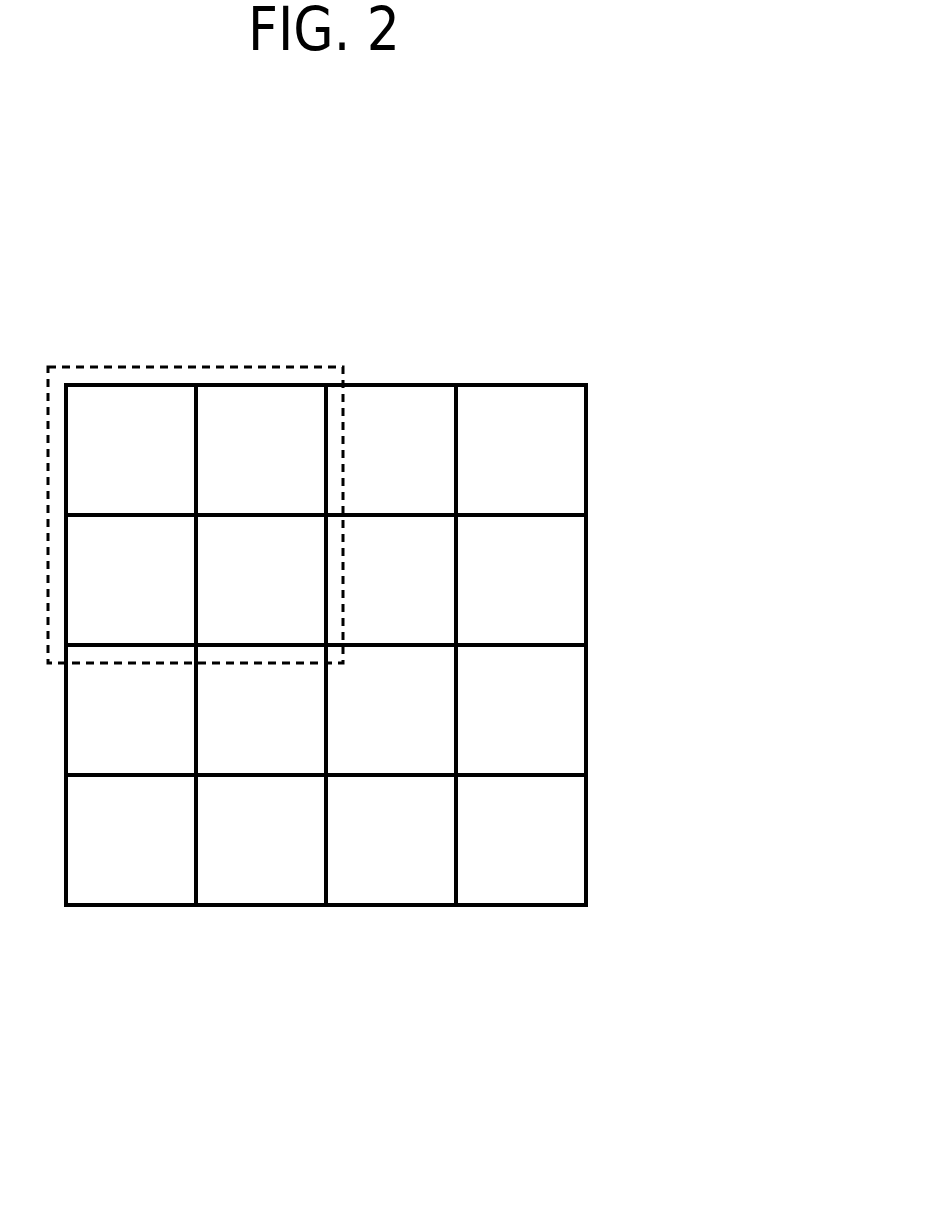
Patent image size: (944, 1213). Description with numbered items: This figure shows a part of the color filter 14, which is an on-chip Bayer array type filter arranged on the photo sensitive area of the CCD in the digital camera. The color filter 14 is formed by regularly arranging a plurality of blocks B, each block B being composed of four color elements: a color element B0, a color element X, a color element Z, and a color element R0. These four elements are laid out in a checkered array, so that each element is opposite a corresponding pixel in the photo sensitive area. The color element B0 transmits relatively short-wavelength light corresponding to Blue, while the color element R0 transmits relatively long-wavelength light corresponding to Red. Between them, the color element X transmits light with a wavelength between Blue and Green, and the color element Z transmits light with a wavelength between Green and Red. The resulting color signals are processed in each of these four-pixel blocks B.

The color filter 14 is at (451, 698).
The block B is at (153, 365).
The color element B0 is at (261, 580).
The color element X is at (391, 580).
The color element Z is at (261, 710).
The color element R0 is at (391, 710).